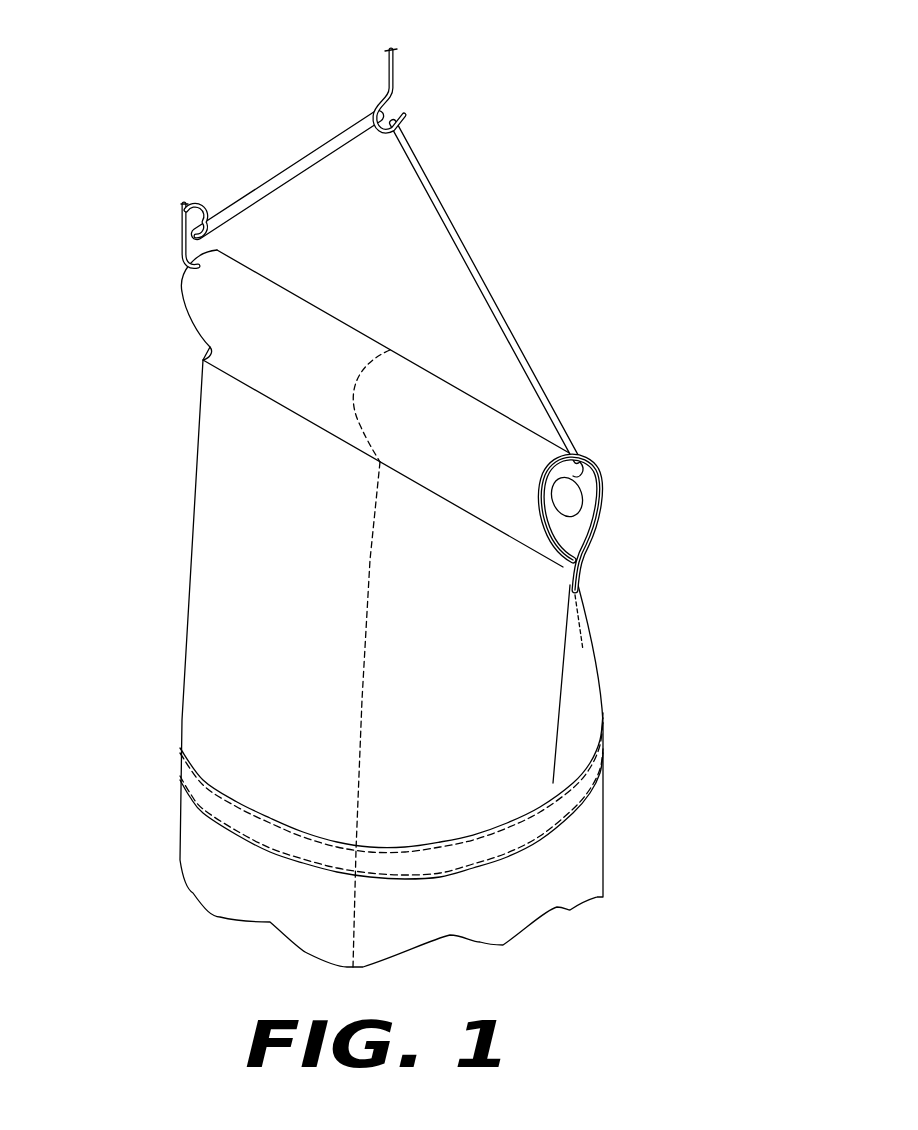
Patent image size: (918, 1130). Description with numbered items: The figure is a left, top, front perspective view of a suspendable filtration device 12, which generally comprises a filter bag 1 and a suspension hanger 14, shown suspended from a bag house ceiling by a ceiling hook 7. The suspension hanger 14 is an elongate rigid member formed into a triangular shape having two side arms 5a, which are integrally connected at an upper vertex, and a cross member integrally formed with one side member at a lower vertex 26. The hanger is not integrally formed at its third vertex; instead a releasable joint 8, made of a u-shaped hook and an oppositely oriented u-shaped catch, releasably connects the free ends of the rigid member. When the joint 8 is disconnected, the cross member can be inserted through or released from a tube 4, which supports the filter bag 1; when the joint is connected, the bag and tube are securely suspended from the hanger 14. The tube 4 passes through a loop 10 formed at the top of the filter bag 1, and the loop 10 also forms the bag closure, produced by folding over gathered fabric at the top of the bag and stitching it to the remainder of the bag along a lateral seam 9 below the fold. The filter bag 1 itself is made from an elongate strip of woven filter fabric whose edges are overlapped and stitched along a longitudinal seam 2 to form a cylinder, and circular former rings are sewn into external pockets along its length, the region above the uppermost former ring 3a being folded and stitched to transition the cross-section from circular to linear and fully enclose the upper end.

The filter bag 1 is at (232, 650).
The longitudinal seam 2 is at (370, 628).
The uppermost former ring 3a is at (197, 798).
The tube 4 is at (565, 497).
The side arms 5a is at (280, 174).
The ceiling hook 7 is at (398, 79).
The releasable joint 8 is at (180, 222).
The lateral seam 9 is at (328, 430).
The loop 10 is at (183, 296).
The suspendable filtration device 12 is at (775, 403).
The suspension hanger 14 is at (552, 360).
The lower vertex 26 is at (586, 479).